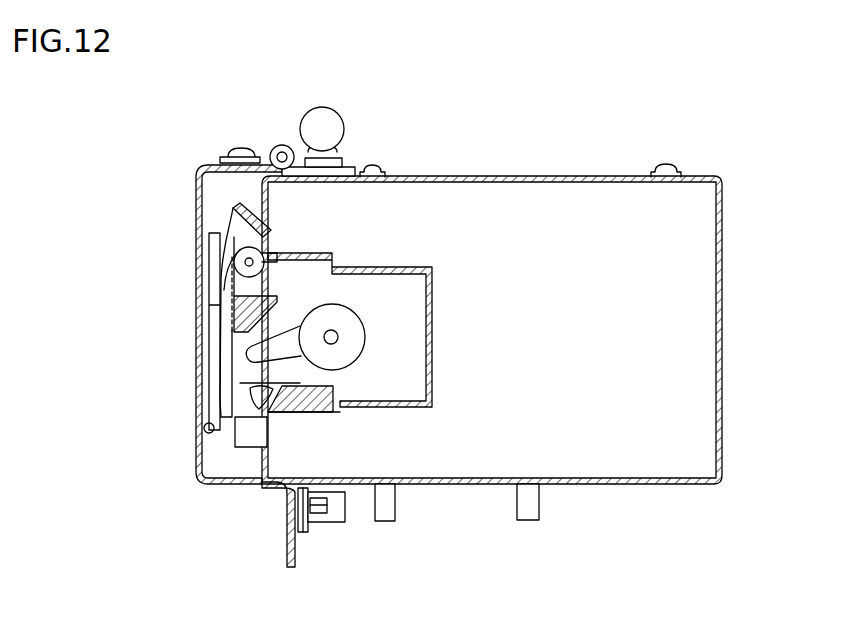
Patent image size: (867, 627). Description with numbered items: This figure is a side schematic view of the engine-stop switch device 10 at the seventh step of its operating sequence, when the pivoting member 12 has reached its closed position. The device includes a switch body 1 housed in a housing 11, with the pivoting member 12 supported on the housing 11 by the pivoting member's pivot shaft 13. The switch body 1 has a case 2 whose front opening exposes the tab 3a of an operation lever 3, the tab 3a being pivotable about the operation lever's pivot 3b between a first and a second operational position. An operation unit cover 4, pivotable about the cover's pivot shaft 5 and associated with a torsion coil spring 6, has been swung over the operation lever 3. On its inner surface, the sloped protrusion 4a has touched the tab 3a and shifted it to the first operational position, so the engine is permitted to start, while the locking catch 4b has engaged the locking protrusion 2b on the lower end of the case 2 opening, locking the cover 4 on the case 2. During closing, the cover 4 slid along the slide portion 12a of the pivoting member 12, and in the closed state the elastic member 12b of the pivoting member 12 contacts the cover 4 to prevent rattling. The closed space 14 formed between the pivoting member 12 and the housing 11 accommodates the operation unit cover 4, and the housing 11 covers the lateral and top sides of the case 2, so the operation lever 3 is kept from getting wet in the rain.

The switch body 1 is at (355, 268).
The case 2 is at (413, 263).
The locking protrusion 2b is at (294, 406).
The operation lever 3 is at (301, 424).
The tab 3a is at (247, 361).
The operation lever's pivot 3b is at (339, 338).
The operation unit cover 4 is at (242, 317).
The sloped protrusion 4a is at (243, 339).
The locking catch 4b is at (262, 399).
The cover's pivot shaft 5 is at (240, 253).
The torsion coil spring 6 is at (243, 264).
The engine-stop switch device 10 is at (731, 157).
The housing 11 is at (606, 176).
The pivoting member 12 is at (208, 177).
The slide portion 12a is at (205, 428).
The elastic member 12b is at (211, 258).
The pivoting member's pivot shaft 13 is at (281, 145).
The space 14 is at (230, 468).